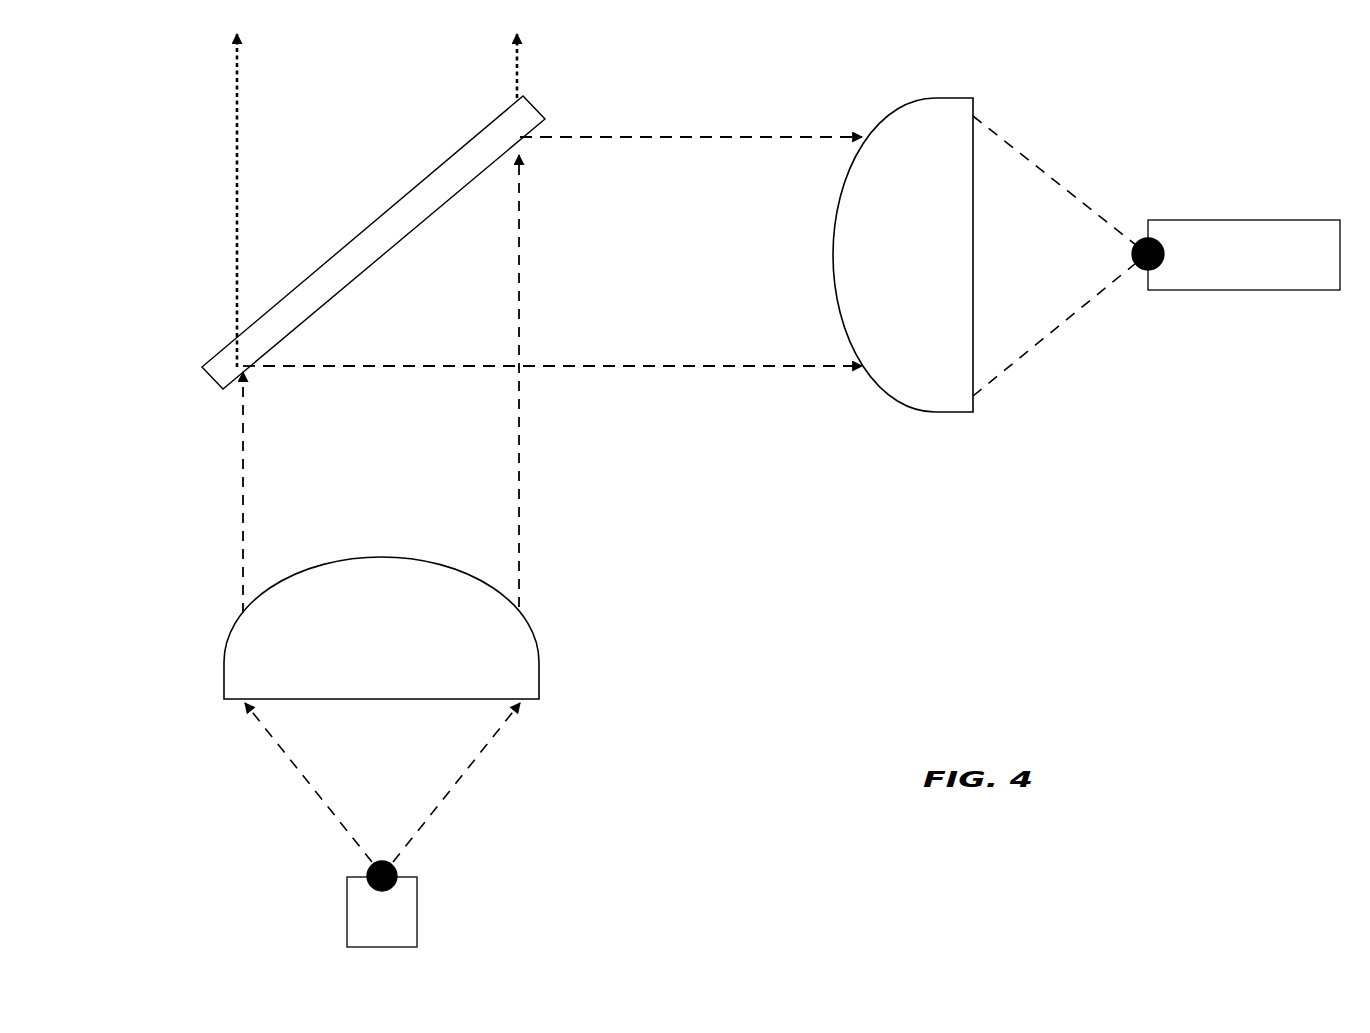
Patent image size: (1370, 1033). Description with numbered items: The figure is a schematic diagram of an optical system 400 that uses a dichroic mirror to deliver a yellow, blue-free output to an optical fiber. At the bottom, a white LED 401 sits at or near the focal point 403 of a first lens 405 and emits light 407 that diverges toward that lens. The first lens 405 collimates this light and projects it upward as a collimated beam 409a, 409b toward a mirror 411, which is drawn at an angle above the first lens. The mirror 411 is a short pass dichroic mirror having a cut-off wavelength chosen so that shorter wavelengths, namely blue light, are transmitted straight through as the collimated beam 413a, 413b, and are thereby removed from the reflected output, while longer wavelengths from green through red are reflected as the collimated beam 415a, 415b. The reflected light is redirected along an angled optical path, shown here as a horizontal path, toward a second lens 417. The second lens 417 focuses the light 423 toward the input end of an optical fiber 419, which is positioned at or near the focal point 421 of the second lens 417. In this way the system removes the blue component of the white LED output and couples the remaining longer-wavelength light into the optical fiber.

The optical system 400 is at (990, 562).
The white LED 401 is at (352, 925).
The focal point 403 is at (368, 866).
The first lens 405 is at (233, 645).
The light 407 is at (482, 758).
The collimated beam 409a is at (238, 518).
The collimated beam 409b is at (517, 520).
The mirror 411 is at (222, 340).
The collimated beam 413a is at (235, 173).
The collimated beam 413b is at (517, 87).
The collimated beam 415a is at (687, 140).
The collimated beam 415b is at (611, 368).
The second lens 417 is at (888, 410).
The optical fiber 419 is at (1252, 220).
The focal point 421 is at (1142, 270).
The light 423 is at (1042, 167).